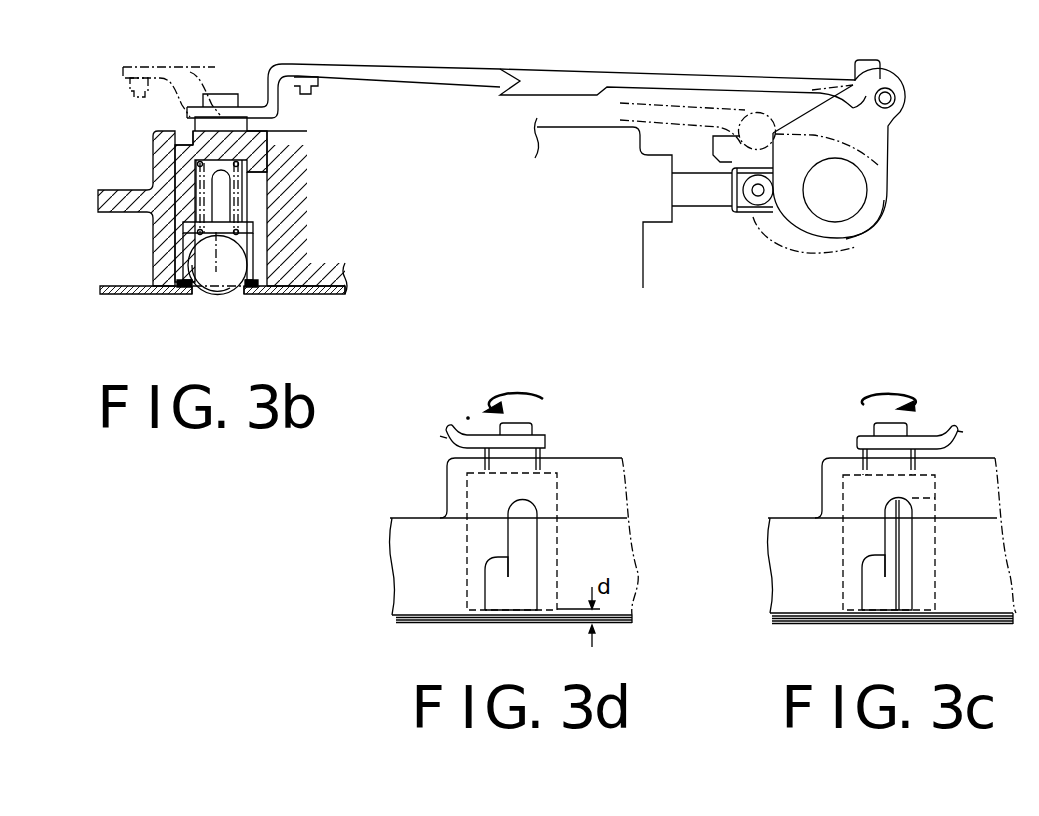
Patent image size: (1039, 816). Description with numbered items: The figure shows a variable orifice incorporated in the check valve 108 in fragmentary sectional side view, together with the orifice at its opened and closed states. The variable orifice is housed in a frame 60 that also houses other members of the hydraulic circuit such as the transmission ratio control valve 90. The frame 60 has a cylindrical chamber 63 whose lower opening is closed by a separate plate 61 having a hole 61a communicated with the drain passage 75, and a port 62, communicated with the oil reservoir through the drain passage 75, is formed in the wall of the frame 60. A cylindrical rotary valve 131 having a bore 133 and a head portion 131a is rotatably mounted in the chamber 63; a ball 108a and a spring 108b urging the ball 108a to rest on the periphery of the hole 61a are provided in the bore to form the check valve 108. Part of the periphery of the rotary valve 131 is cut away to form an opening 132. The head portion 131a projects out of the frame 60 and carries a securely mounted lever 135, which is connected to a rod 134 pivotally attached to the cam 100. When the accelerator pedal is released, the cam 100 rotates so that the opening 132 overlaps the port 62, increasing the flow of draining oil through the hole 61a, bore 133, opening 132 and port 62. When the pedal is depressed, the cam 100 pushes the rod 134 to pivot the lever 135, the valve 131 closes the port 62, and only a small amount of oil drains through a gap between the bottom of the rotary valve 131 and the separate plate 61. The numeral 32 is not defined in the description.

In FIG. 3b, the frame 60 is at (120, 193).
In FIG. 3b, the separate plate 61 is at (127, 294).
In FIG. 3d, the separate plate 61 is at (465, 624).
In FIG. 3b, the hole 61a is at (197, 289).
In FIG. 3b, the port 62 is at (214, 296).
In FIG. 3d, the port 62 is at (537, 567).
In FIG. 3c, the port 62 is at (907, 552).
In FIG. 3b, the cylindrical chamber 63 is at (165, 150).
In FIG. 3b, the drain passage 75 is at (325, 305).
In FIG. 3b, the transmission ratio control valve 90 is at (661, 235).
In FIG. 3b, the cam 100 is at (890, 165).
In FIG. 3b, the check valve 108 is at (231, 311).
In FIG. 3b, the ball 108a is at (240, 297).
In FIG. 3b, the spring 108b is at (182, 136).
In FIG. 3b, the cylindrical rotary valve 131 is at (160, 227).
In FIG. 3d, the cylindrical rotary valve 131 is at (507, 577).
In FIG. 3c, the cylindrical rotary valve 131 is at (872, 577).
In FIG. 3b, the head portion 131a is at (223, 128).
In FIG. 3b, the opening 132 is at (262, 172).
In FIG. 3b, the bore 133 is at (180, 238).
In FIG. 3b, the rod 134 is at (713, 78).
In FIG. 3b, the lever 135 is at (270, 100).
In FIG. 3c, the slot 32 is at (907, 587).